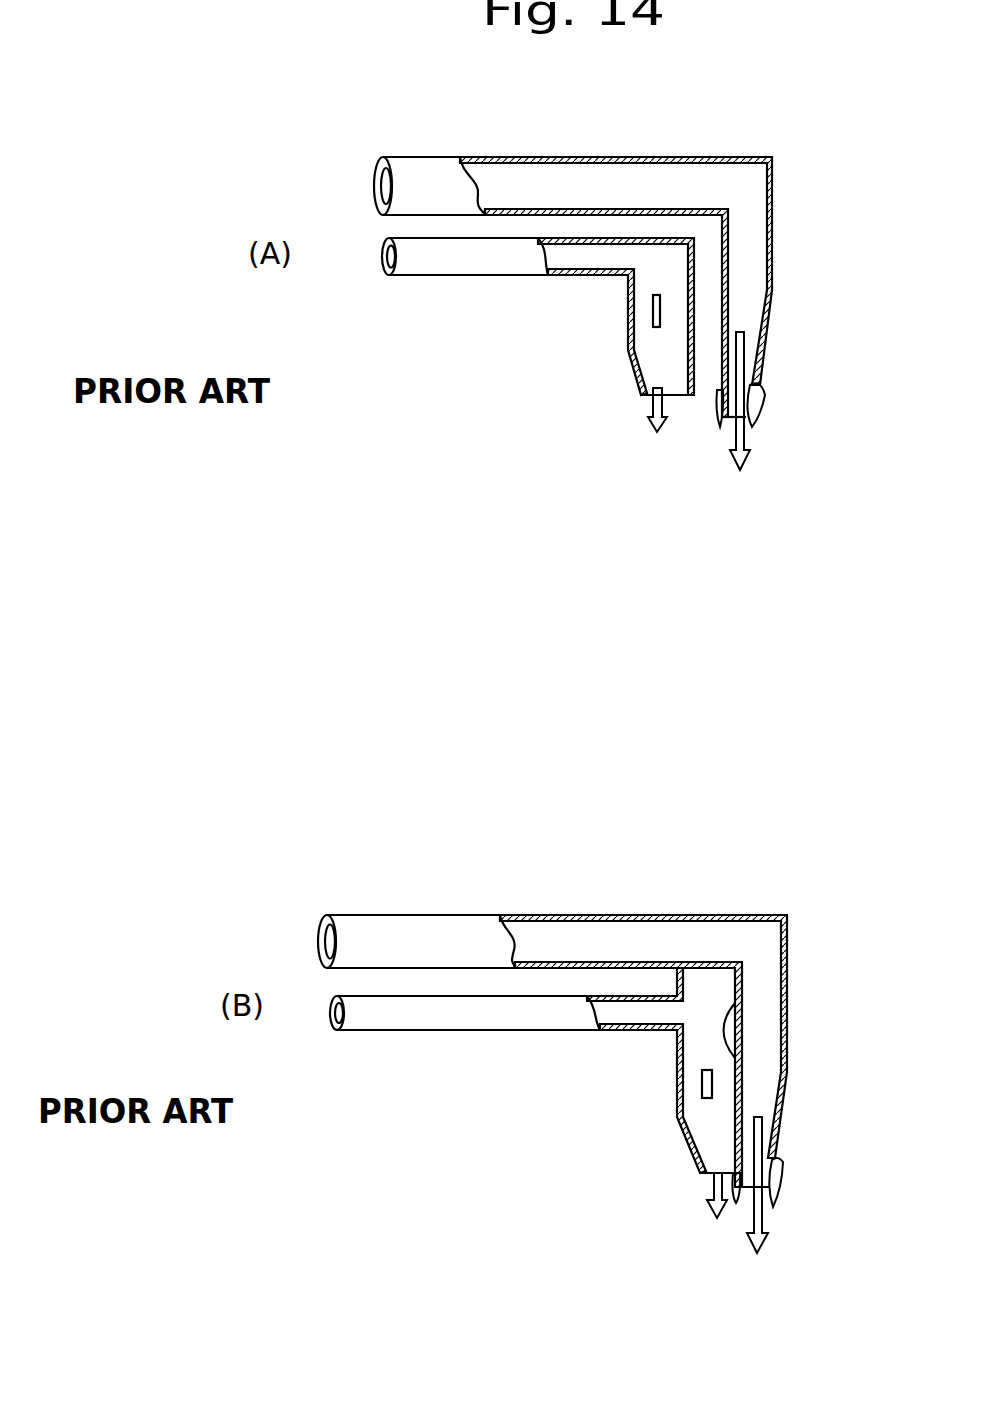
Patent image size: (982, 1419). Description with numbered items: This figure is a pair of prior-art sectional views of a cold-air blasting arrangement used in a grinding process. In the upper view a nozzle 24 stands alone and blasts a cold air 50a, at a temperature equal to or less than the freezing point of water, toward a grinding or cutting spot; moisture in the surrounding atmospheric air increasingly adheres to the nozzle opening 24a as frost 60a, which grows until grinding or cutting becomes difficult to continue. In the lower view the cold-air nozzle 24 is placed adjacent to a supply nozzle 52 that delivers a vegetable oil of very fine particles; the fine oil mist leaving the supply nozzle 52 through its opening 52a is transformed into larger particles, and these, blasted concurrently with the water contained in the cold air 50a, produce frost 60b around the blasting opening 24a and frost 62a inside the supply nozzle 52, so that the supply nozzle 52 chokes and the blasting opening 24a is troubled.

The nozzle 24 is at (430, 158).
The supply nozzle 52 is at (448, 279).
The nozzle opening 24a is at (721, 434).
The outlet opening of pipe 52 52a is at (652, 426).
The cold air 50a is at (747, 462).
The nozzle tip 60a is at (757, 423).
The nozzle tip 60b is at (785, 1187).
The protrusion in pipe housing 62a is at (722, 1030).